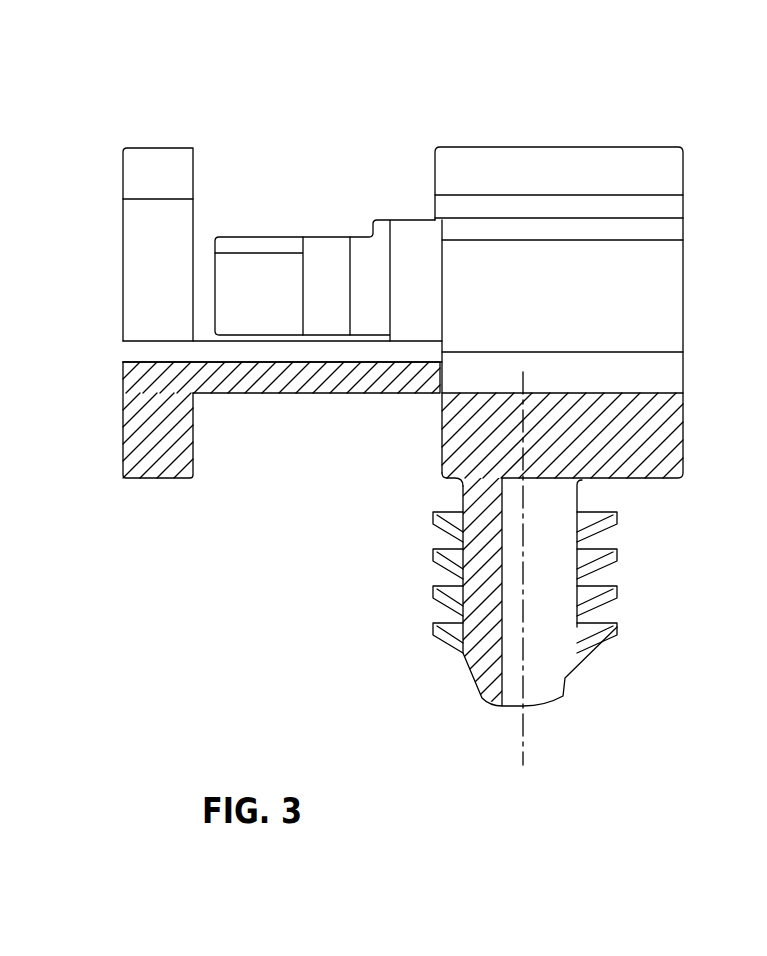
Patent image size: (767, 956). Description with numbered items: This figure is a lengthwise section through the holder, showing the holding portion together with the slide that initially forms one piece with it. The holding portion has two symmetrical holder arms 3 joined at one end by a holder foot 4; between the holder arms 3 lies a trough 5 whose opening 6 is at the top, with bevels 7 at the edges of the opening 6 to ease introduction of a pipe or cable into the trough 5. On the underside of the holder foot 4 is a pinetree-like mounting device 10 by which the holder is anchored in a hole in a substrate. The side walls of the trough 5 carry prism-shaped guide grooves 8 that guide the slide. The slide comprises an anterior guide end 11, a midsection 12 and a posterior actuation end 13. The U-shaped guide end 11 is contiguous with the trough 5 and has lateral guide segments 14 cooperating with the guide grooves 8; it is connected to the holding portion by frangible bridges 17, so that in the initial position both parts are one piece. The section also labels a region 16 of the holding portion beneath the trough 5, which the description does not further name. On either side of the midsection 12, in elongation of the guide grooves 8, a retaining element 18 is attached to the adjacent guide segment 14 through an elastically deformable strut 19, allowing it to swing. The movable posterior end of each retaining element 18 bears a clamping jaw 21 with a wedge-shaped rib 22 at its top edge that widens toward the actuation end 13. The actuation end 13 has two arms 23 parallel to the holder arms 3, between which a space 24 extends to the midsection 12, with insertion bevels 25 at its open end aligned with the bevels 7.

The holder arm 3 is at (684, 172).
The holder foot 4 is at (642, 460).
The trough 5 is at (587, 362).
The opening 6 is at (638, 204).
The bevel 7 is at (600, 160).
The guide groove 8 is at (518, 258).
The mounting device 10 is at (482, 578).
The guide end 11 is at (427, 289).
The midsection 12 is at (320, 378).
The actuation end 13 is at (130, 434).
The guide segment 14 is at (417, 234).
The block 16 is at (630, 392).
The frangible bridge 17 is at (433, 397).
The retaining element 18 is at (321, 226).
The elastically deformable strut 19 is at (379, 302).
The clamping jaw 21 is at (265, 295).
The wedge-shaped rib 22 is at (245, 237).
The arm 23 is at (156, 157).
The space 24 is at (140, 245).
The insertion bevel 25 is at (134, 168).